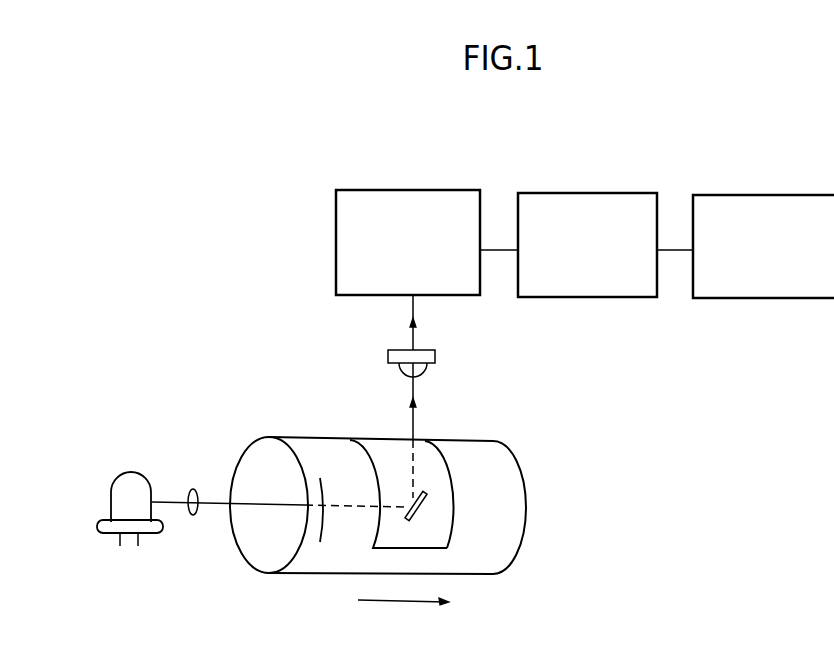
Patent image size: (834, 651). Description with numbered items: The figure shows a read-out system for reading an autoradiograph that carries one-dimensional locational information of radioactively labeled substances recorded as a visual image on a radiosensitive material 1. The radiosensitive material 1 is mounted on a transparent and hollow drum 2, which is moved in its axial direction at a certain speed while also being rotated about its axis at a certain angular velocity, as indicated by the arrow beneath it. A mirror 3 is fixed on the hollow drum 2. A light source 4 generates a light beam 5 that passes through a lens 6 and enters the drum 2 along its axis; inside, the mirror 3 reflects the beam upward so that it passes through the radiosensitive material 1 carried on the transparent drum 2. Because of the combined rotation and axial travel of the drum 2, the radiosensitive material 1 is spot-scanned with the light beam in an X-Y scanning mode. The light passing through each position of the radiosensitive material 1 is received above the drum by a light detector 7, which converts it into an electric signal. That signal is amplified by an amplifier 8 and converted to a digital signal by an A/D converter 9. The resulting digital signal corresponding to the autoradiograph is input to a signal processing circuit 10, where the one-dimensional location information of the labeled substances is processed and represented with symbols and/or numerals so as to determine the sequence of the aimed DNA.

The radiosensitive material 1 is at (437, 533).
The transparent and hollow drum 2 is at (323, 558).
The mirror 3 is at (427, 500).
The light source 4 is at (133, 472).
The light beam 5 is at (172, 505).
The lens 6 is at (193, 488).
The light detector 7 is at (388, 358).
The amplifier 8 is at (384, 195).
The A/D converter 9 is at (640, 198).
The signal processing circuit 10 is at (775, 198).